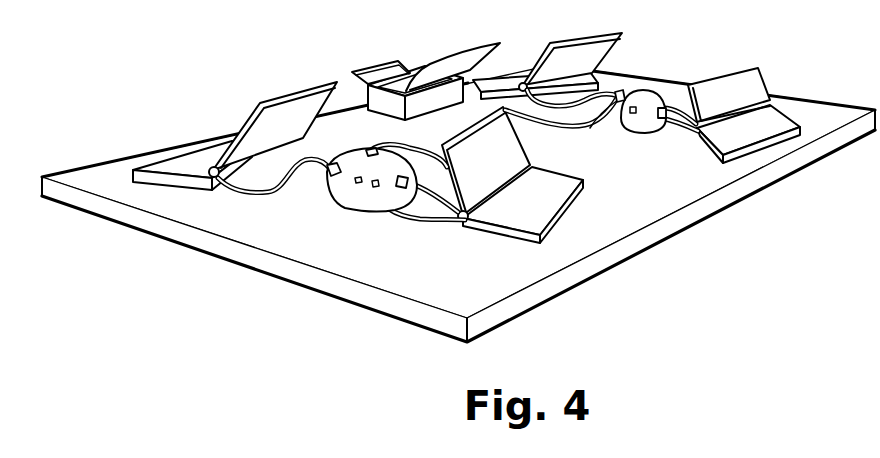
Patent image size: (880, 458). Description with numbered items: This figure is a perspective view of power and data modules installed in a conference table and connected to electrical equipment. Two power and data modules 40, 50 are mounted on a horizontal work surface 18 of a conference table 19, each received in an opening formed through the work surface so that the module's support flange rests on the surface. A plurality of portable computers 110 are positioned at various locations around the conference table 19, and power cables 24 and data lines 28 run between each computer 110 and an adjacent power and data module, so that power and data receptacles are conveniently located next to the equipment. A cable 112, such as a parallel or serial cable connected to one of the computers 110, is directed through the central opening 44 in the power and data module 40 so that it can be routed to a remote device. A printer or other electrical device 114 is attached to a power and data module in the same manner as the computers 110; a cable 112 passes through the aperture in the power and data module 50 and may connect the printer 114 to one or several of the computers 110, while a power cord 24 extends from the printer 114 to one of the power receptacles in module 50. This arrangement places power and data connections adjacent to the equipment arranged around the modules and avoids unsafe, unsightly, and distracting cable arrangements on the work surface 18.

The horizontal work surface 18 is at (458, 203).
The conference table 19 is at (131, 152).
The power cable 24 is at (292, 198).
The data line 28 is at (254, 198).
The power and data module 40 is at (372, 239).
The central opening 44 is at (360, 150).
The power and data module 50 is at (666, 76).
The portable computer 110 is at (172, 152).
The cable 112 is at (394, 138).
The printer 114 is at (416, 63).